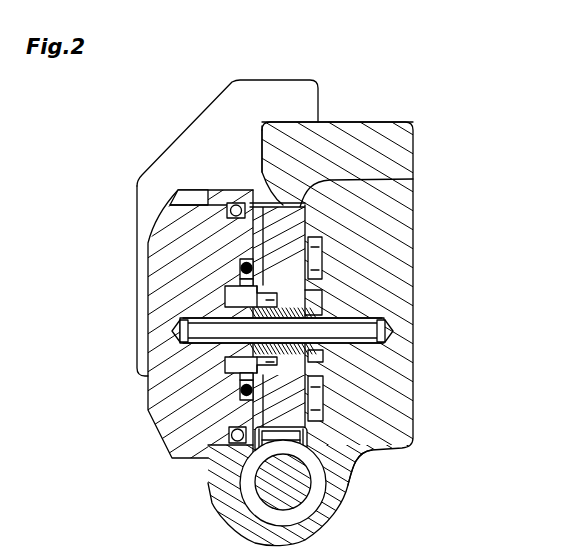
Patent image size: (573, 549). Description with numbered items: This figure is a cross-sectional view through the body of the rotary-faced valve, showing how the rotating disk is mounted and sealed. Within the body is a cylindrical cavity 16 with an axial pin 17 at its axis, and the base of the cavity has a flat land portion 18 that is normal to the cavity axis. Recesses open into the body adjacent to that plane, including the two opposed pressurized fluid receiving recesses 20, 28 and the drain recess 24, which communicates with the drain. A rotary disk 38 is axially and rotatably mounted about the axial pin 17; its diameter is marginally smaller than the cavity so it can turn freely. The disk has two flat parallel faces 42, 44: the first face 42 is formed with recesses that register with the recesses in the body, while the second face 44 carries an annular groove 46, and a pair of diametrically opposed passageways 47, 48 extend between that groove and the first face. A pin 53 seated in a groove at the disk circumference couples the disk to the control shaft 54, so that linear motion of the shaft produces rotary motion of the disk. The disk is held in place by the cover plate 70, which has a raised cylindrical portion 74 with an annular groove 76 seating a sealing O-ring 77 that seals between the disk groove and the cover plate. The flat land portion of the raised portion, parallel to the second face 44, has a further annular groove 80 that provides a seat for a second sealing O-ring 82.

The cylindrical cavity 16 is at (413, 172).
The axial pin 17 is at (325, 298).
The flat land portion 18 is at (355, 197).
The pressurized fluid receiving recess 20 is at (323, 397).
The drain recess 24 is at (387, 346).
The pressurized fluid receiving recess 28 is at (322, 260).
The rotary disk 38 is at (310, 223).
The first face 42 is at (170, 432).
The second face 44 is at (262, 172).
The annular groove 46 is at (225, 290).
The passageway 47 is at (240, 280).
The passageway 48 is at (240, 395).
The pin 53 is at (400, 427).
The control shaft 54 is at (275, 488).
The cover plate 70 is at (153, 426).
The raised cylindrical portion 74 is at (207, 190).
The annular groove 76 is at (229, 441).
The sealing O-ring 77 is at (232, 203).
The annular groove 80 is at (240, 383).
The sealing O-ring 82 is at (240, 261).